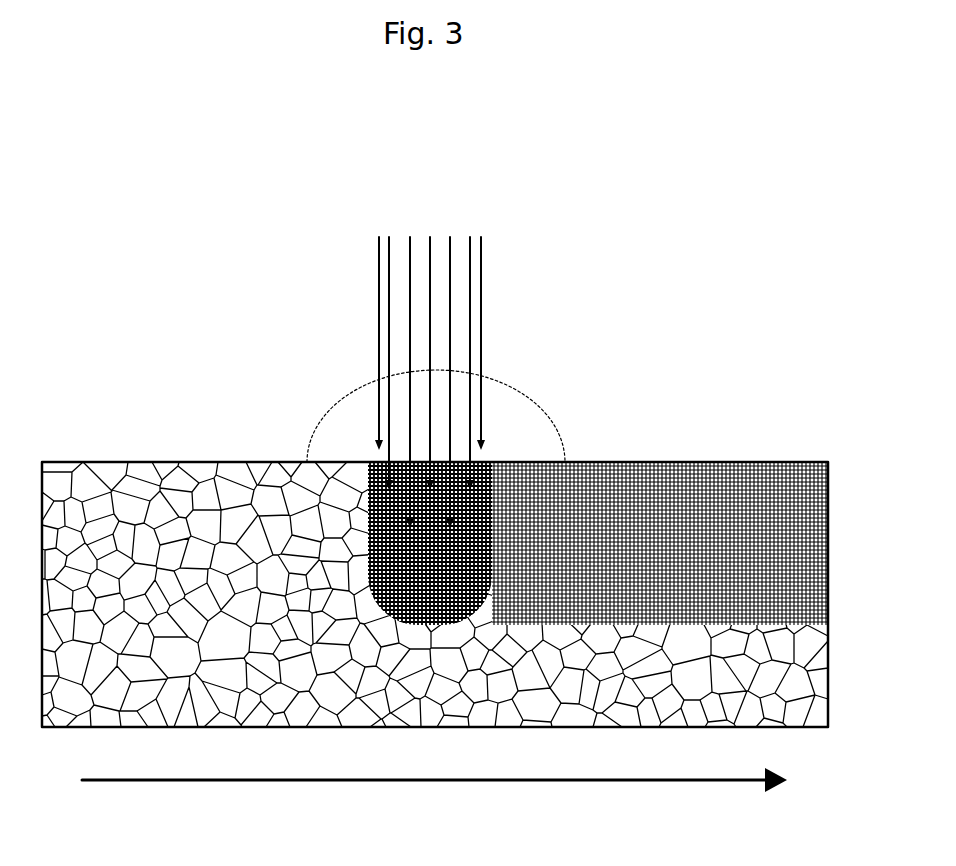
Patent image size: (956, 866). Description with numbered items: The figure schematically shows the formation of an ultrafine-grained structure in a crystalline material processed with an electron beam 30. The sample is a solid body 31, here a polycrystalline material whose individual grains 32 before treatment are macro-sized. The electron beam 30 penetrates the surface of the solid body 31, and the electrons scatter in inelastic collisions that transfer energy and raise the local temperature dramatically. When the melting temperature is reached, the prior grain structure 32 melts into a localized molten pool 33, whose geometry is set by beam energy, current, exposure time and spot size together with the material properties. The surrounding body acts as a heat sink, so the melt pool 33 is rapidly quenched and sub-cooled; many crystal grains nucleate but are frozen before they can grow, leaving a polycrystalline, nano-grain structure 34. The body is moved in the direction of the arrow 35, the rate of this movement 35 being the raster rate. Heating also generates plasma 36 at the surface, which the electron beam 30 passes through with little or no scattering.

The electron beam 30 is at (477, 327).
The solid body 31 is at (207, 463).
The grains 32 is at (92, 480).
The molten pool 33 is at (475, 580).
The nano-grain structure 34 is at (713, 498).
The arrow 35 is at (227, 778).
The plasma 36 is at (543, 408).